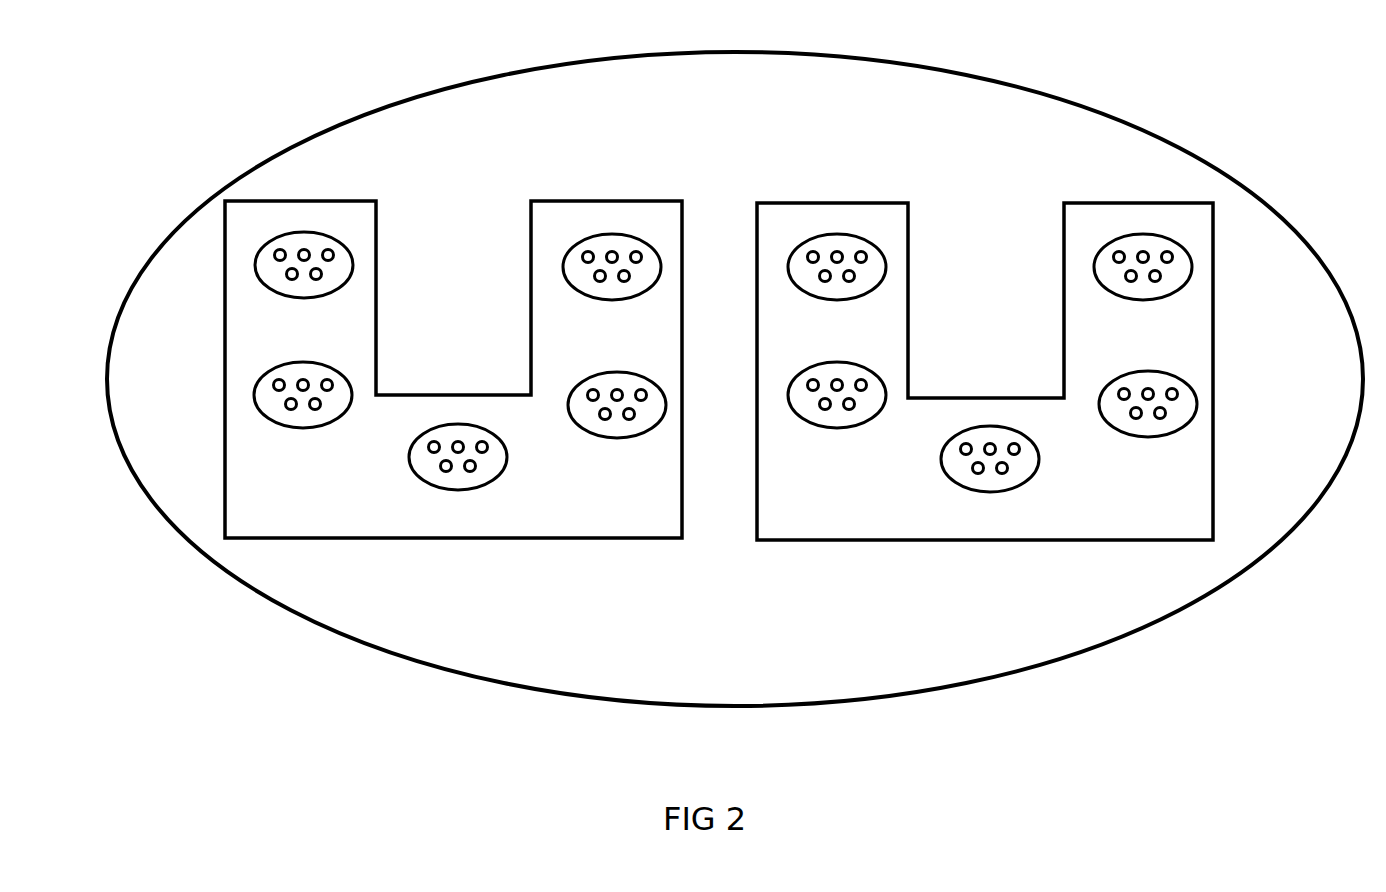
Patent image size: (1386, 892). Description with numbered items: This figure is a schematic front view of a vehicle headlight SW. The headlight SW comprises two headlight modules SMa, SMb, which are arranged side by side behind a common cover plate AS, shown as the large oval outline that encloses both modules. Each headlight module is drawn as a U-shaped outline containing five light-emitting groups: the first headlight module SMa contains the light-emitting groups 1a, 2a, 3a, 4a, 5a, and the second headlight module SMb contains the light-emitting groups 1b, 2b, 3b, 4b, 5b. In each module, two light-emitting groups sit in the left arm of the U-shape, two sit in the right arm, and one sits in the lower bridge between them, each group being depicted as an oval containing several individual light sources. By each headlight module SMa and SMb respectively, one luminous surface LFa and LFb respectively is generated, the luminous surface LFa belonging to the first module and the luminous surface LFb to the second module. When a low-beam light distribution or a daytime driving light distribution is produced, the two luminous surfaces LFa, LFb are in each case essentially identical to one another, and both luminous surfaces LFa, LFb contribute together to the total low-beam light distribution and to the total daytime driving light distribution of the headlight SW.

The vehicle headlight SW is at (224, 148).
The cover plate AS is at (330, 612).
The luminous surface LFa is at (578, 213).
The luminous surface LFb is at (853, 213).
The headlight module SMa is at (506, 561).
The headlight module SMb is at (911, 561).
The light-emitting group 1a is at (268, 301).
The light-emitting group 2a is at (274, 437).
The light-emitting group 3a is at (488, 488).
The light-emitting group 4a is at (583, 435).
The light-emitting group 5a is at (580, 300).
The light-emitting group 1b is at (797, 300).
The light-emitting group 2b is at (797, 427).
The light-emitting group 3b is at (1007, 502).
The light-emitting group 4b is at (1117, 437).
The light-emitting group 5b is at (1105, 300).